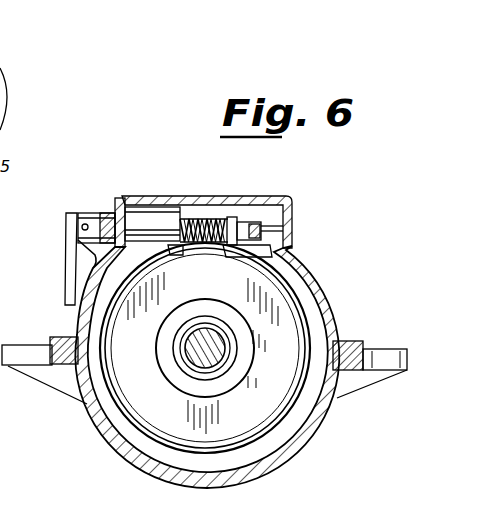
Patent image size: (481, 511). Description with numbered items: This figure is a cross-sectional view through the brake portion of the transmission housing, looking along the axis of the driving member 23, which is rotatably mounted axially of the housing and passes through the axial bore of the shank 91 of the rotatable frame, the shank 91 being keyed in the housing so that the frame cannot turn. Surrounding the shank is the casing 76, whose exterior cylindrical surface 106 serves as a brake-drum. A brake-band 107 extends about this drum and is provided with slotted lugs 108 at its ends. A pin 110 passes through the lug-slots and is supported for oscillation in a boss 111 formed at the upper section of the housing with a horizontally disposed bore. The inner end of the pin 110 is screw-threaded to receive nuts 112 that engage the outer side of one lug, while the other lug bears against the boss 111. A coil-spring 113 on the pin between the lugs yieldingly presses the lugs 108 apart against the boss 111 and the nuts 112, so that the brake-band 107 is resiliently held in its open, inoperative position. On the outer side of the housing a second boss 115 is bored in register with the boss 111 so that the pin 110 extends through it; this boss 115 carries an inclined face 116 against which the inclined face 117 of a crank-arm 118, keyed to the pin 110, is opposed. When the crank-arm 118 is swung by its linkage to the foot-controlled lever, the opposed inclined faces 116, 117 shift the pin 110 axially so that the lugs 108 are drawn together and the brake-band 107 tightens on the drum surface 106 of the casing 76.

The exterior cylindrical surface 106 is at (290, 290).
The brake-band 107 is at (302, 314).
The casing 76 is at (145, 398).
The shank 91 is at (200, 318).
The driving member 23 is at (222, 352).
The nuts 112 is at (266, 218).
The boss 111 is at (146, 215).
The pin 110 is at (211, 228).
The coil-spring 113 is at (220, 220).
The slotted lugs 108 is at (262, 238).
The boss 115 is at (106, 217).
The inclined face 116 is at (98, 224).
The inclined face 117 is at (95, 258).
The crank-arm 118 is at (70, 286).